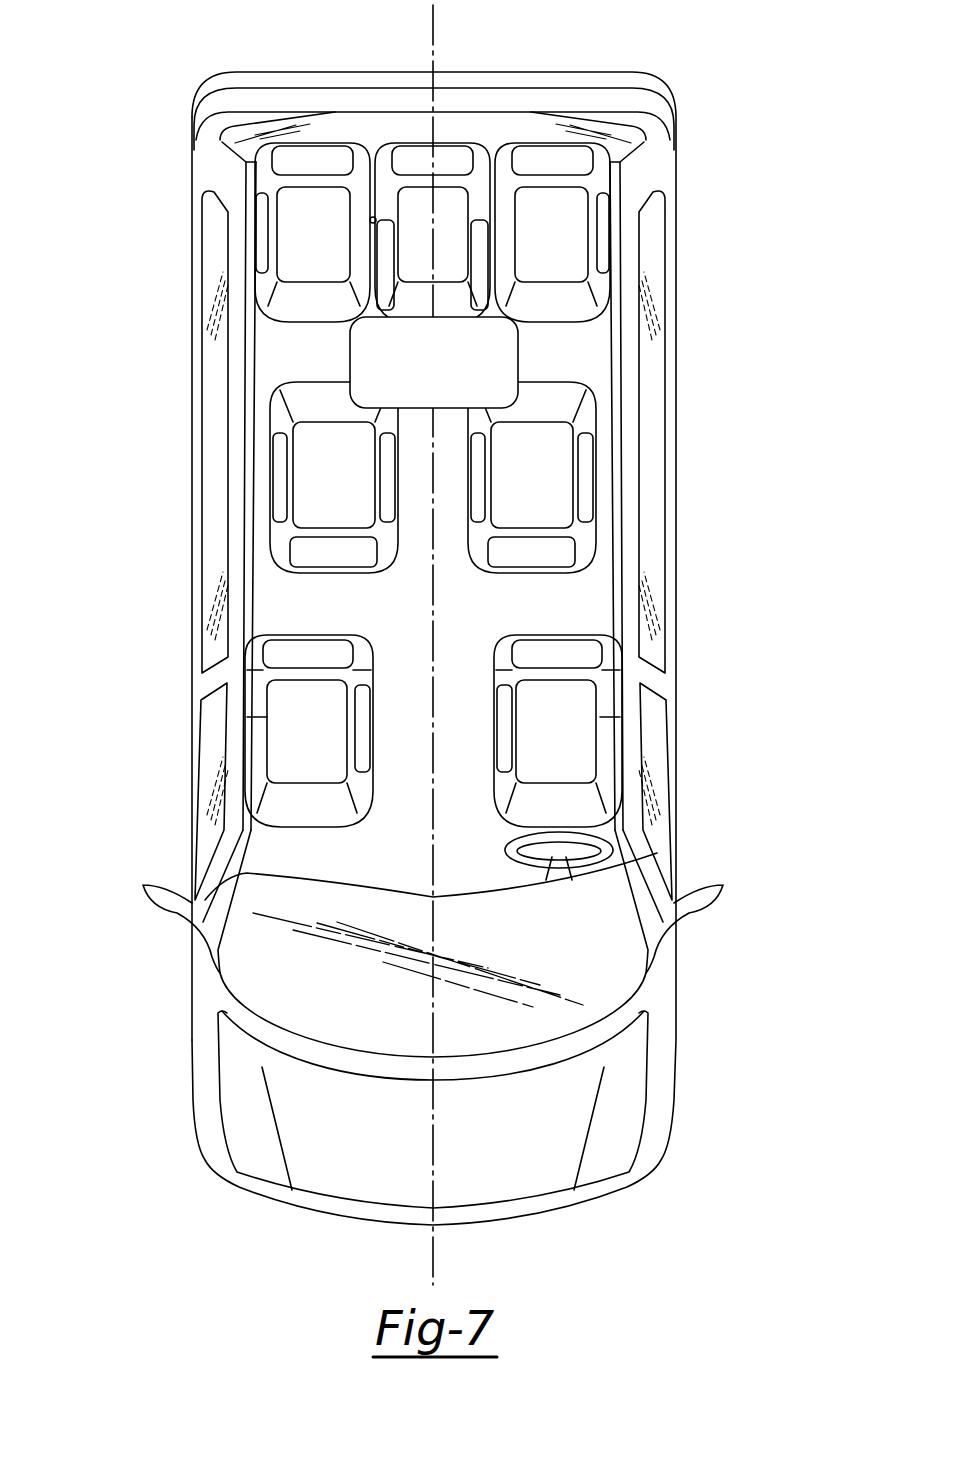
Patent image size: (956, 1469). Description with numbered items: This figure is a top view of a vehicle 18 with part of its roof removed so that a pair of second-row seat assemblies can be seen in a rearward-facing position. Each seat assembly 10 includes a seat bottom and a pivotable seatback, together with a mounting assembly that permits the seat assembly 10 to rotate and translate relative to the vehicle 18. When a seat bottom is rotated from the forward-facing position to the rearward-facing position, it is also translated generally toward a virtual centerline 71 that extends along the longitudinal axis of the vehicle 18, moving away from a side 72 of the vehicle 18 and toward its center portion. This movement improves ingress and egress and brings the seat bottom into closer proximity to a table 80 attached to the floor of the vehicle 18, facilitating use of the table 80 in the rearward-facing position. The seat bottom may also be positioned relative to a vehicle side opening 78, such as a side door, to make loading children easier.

The virtual centerline 71 is at (440, 33).
The vehicle 18 is at (683, 167).
The seat assembly 10 is at (305, 370).
The table 80 is at (489, 375).
The side 72 is at (192, 425).
The vehicle side opening 78 is at (212, 531).